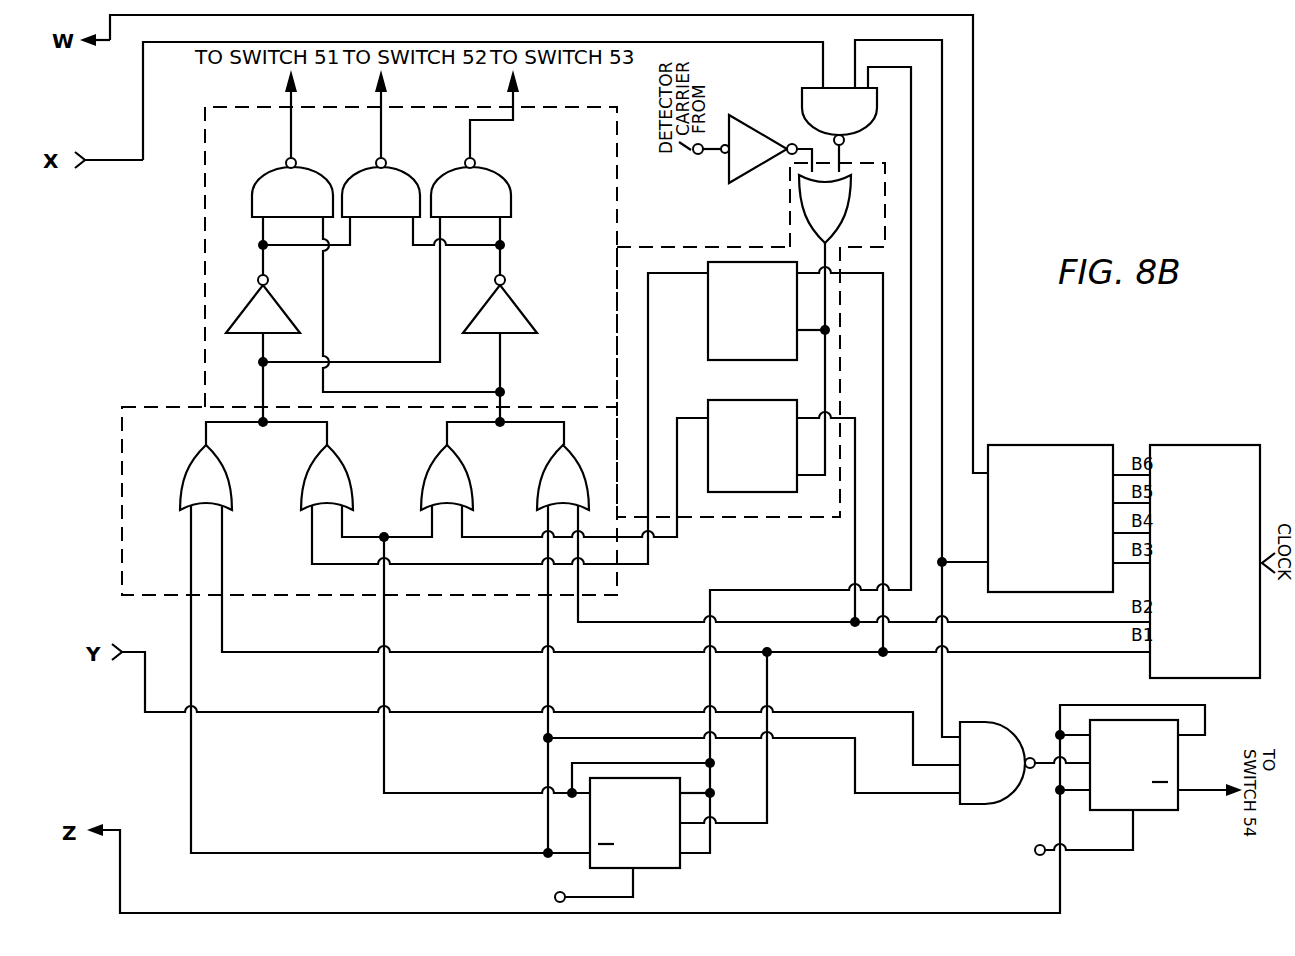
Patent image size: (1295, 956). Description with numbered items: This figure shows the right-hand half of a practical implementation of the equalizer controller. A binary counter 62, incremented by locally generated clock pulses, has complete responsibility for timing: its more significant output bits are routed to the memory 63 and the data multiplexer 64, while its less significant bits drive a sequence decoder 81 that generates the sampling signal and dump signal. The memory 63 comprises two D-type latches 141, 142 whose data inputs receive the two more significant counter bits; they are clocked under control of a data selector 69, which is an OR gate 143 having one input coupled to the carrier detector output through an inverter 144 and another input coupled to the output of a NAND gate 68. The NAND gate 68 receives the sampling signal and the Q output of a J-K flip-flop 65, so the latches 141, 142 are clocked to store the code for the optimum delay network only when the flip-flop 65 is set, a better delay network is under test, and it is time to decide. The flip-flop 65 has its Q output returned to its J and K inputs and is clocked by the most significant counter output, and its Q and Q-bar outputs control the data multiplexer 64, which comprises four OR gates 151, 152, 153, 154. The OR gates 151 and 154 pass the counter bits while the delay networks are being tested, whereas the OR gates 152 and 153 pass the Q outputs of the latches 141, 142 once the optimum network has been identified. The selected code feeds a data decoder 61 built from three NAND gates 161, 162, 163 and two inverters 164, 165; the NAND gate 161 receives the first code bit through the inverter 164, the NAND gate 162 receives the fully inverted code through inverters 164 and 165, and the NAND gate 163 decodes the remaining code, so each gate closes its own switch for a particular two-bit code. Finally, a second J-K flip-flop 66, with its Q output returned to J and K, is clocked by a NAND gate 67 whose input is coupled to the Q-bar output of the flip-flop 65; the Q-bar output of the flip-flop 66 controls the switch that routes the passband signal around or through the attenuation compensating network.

The data decoder 61 is at (200, 214).
The binary counter 62 is at (1178, 456).
The memory 63 is at (705, 208).
The data multiplexer 64 is at (112, 546).
The J-K flip-flop 65 is at (668, 870).
The J-K flip-flop 66 is at (1132, 728).
The NAND gate 67 is at (992, 736).
The NAND gate 68 is at (805, 110).
The data selector 69 is at (868, 159).
The sequence decoder 81 is at (1046, 456).
The D-type latch 141 is at (712, 298).
The D-type latch 142 is at (765, 490).
The OR gate 143 is at (800, 198).
The inverter 144 is at (729, 177).
The OR gate 151 is at (222, 470).
The OR gate 152 is at (345, 480).
The OR gate 153 is at (465, 480).
The OR gate 154 is at (582, 480).
The NAND gate 161 is at (272, 190).
The NAND gate 162 is at (368, 190).
The NAND gate 163 is at (456, 190).
The inverter 164 is at (285, 318).
The inverter 165 is at (523, 295).